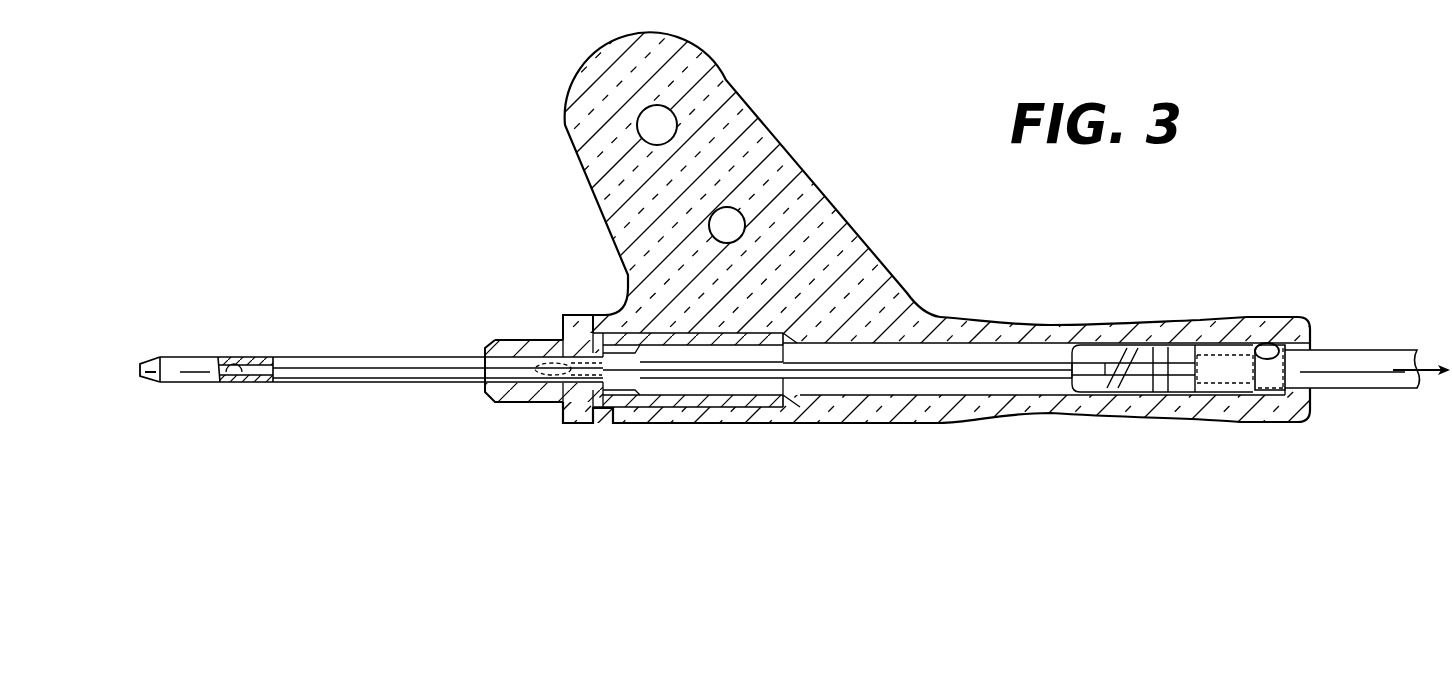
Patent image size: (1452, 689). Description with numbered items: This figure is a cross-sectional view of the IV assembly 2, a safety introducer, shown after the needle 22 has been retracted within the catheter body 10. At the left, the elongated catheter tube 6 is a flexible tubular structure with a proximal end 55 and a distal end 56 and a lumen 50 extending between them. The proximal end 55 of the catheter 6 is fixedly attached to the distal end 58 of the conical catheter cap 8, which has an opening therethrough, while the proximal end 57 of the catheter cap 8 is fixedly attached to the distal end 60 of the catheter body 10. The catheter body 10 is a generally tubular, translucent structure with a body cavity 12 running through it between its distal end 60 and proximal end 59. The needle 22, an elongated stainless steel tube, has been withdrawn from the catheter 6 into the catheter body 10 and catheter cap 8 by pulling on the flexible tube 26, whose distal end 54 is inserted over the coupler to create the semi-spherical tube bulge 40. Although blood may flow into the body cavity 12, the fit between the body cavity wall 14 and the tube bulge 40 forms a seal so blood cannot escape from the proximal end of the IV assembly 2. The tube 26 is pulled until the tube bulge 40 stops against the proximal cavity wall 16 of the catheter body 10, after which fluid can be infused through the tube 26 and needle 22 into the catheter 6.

The IV assembly 2 is at (615, 582).
The catheter tube 6 is at (418, 386).
The catheter cap 8 is at (513, 336).
The catheter body 10 is at (922, 425).
The body cavity 12 is at (993, 387).
The body cavity wall 14 is at (963, 343).
The proximal cavity wall 16 is at (1263, 358).
The needle 22 is at (843, 380).
The tube 26 is at (1367, 390).
The tube bulge 40 is at (1272, 392).
The lumen 50 is at (234, 376).
The distal end of tube 54 is at (1186, 382).
The proximal end of catheter tube 55 is at (602, 385).
The distal end of catheter tube 56 is at (141, 371).
The proximal end of catheter cap 57 is at (792, 338).
The distal end of catheter cap 58 is at (484, 393).
The proximal end of catheter body 59 is at (1310, 338).
The distal end of catheter body 60 is at (592, 326).